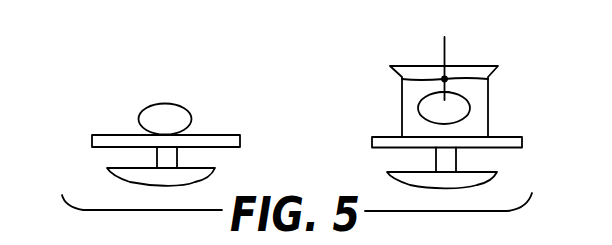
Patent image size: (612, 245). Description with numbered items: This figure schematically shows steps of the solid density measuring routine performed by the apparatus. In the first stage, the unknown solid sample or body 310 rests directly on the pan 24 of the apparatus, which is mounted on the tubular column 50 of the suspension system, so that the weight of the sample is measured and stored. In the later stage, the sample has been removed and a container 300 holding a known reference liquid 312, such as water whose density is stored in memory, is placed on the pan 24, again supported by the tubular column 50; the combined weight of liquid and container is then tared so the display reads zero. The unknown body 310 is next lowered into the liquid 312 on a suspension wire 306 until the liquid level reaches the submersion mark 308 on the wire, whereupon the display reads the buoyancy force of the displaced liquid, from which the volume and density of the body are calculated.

The pan 24 is at (109, 135).
The tubular column 50 is at (157, 160).
The container 300 is at (413, 66).
The suspension wire 306 is at (446, 50).
The submersion mark 308 is at (444, 79).
The unknown solid sample or body 310 is at (163, 104).
The reference liquid 312 is at (482, 93).